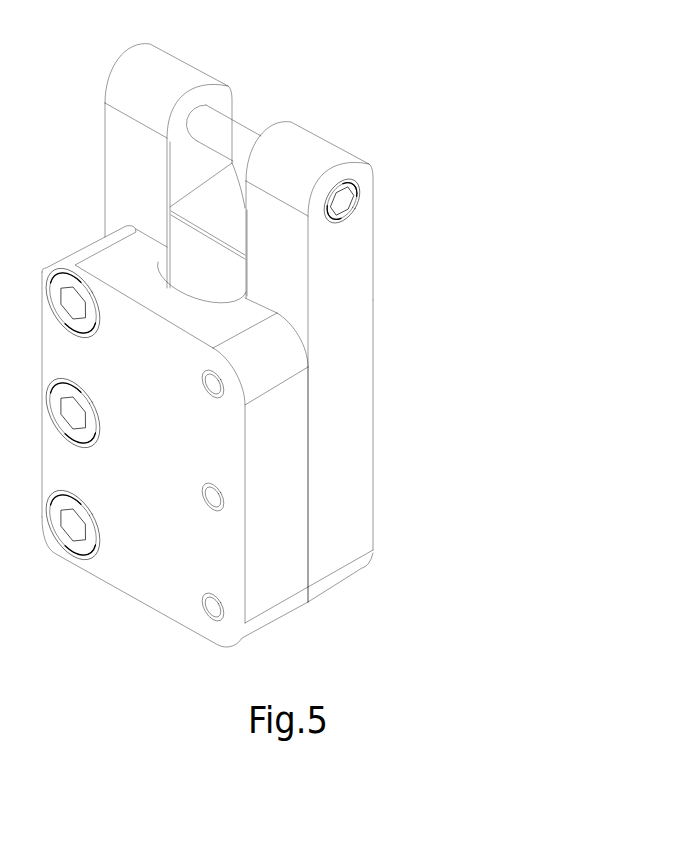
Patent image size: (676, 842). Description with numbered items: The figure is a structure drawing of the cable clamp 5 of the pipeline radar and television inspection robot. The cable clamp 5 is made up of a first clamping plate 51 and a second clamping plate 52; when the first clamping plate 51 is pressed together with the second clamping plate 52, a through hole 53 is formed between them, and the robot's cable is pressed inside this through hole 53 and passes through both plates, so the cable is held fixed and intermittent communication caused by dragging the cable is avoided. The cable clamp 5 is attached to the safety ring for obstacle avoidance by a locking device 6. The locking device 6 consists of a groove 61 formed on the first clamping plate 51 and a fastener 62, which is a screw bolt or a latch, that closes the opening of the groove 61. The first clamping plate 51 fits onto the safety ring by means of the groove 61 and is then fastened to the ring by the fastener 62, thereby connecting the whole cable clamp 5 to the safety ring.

The cable clamp 5 is at (306, 425).
The first clamping plate 51 is at (336, 379).
The second clamping plate 52 is at (271, 469).
The through hole 53 is at (211, 279).
The locking device 6 is at (261, 189).
The groove 61 is at (249, 172).
The fastener 62 is at (236, 128).